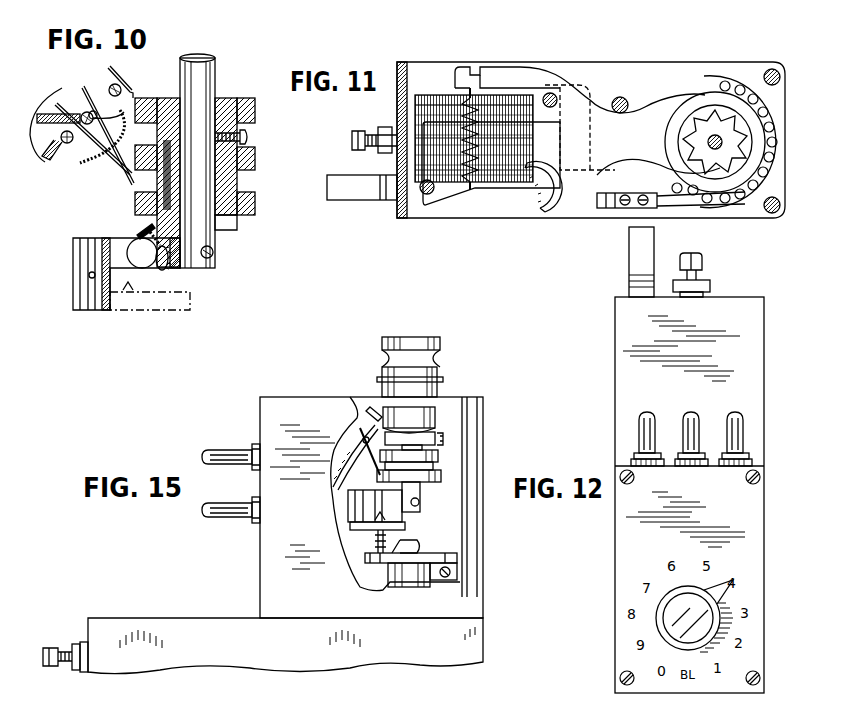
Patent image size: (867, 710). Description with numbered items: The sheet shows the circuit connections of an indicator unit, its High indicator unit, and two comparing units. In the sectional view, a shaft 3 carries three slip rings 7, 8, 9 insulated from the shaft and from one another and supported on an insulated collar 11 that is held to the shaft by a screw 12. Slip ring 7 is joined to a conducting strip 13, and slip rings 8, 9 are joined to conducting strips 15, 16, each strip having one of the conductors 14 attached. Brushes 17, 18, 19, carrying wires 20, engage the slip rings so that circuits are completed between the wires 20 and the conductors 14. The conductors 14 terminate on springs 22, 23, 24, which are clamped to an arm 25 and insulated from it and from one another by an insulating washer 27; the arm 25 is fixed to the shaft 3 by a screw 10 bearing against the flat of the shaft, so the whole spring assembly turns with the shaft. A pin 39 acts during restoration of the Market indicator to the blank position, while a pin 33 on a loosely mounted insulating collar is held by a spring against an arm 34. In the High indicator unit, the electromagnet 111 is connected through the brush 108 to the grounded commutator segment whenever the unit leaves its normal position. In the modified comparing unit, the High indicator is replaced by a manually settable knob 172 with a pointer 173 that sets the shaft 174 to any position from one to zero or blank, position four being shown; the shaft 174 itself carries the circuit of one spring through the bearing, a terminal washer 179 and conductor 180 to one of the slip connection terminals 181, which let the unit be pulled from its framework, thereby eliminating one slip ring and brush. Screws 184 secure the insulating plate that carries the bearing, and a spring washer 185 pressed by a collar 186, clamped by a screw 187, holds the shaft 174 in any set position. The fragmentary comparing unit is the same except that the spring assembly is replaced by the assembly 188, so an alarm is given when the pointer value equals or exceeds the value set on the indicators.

In FIG. 10, the shaft 3 is at (203, 85).
In FIG. 10, the slip ring 7 is at (256, 107).
In FIG. 10, the slip ring 8 is at (256, 157).
In FIG. 10, the slip ring 9 is at (256, 202).
In FIG. 10, the screw 10 is at (213, 252).
In FIG. 10, the insulated collar 11 is at (228, 208).
In FIG. 10, the screw 12 is at (249, 136).
In FIG. 10, the conducting strip 13 is at (162, 98).
In FIG. 10, the conductors 14 is at (163, 268).
In FIG. 10, the conducting strip 15 is at (153, 173).
In FIG. 10, the conducting strip 16 is at (138, 232).
In FIG. 10, the brush 17 is at (131, 92).
In FIG. 10, the brush 18 is at (131, 138).
In FIG. 10, the brush 19 is at (105, 160).
In FIG. 10, the wires 20 is at (78, 113).
In FIG. 10, the spring 22 is at (73, 243).
In FIG. 10, the spring 23 is at (92, 258).
In FIG. 10, the spring 24 is at (100, 283).
In FIG. 10, the arm 25 is at (185, 258).
In FIG. 10, the insulating washer 27 is at (128, 250).
In FIG. 10, the pin 39 is at (150, 318).
In FIG. 15, the pin 39 is at (386, 520).
In FIG. 11, the brush 108 is at (618, 190).
In FIG. 11, the electromagnet 111 is at (441, 100).
In FIG. 12, the manually settable knob 172 is at (708, 622).
In FIG. 15, the manually settable knob 172 is at (430, 326).
In FIG. 12, the pointer 173 is at (727, 593).
In FIG. 15, the pointer 173 is at (441, 380).
In FIG. 15, the shaft 174 is at (420, 499).
In FIG. 15, the terminal washer 179 is at (452, 400).
In FIG. 15, the conductor 180 is at (366, 412).
In FIG. 12, the slip connection terminals 181 is at (735, 412).
In FIG. 15, the slip connection terminals 181 is at (235, 505).
In FIG. 12, the screws 184 is at (622, 473).
In FIG. 15, the spring washer 185 is at (443, 420).
In FIG. 15, the collar 186 is at (363, 438).
In FIG. 15, the screw 187 is at (443, 444).
In FIG. 15, the spring assembly 188 is at (348, 515).
In FIG. 15, the pin 33 is at (395, 553).
In FIG. 15, the arm 34 is at (430, 560).